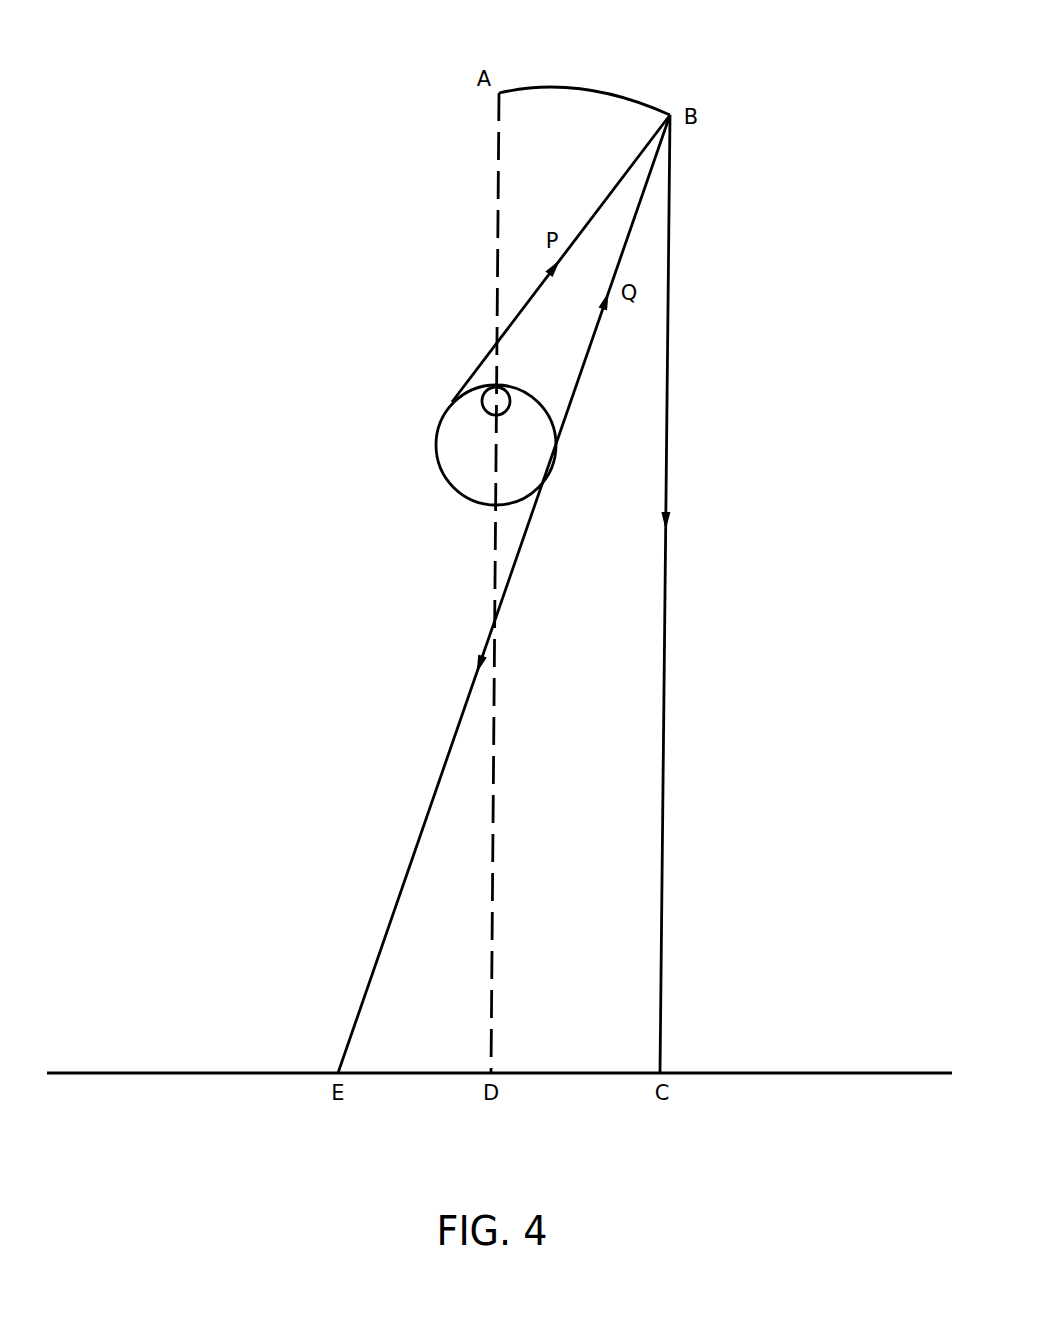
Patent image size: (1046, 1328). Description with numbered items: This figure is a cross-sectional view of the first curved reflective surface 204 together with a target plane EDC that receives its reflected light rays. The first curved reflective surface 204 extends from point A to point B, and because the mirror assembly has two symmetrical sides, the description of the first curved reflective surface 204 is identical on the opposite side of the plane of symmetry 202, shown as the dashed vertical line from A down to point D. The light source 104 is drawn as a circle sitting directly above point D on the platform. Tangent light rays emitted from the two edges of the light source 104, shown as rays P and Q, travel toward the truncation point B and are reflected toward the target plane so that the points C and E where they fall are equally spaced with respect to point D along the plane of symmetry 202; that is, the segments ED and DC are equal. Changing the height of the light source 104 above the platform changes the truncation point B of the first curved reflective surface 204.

The light source 104 is at (453, 469).
The plane of symmetry 202 is at (499, 167).
The first curved reflective surface 204 is at (583, 90).